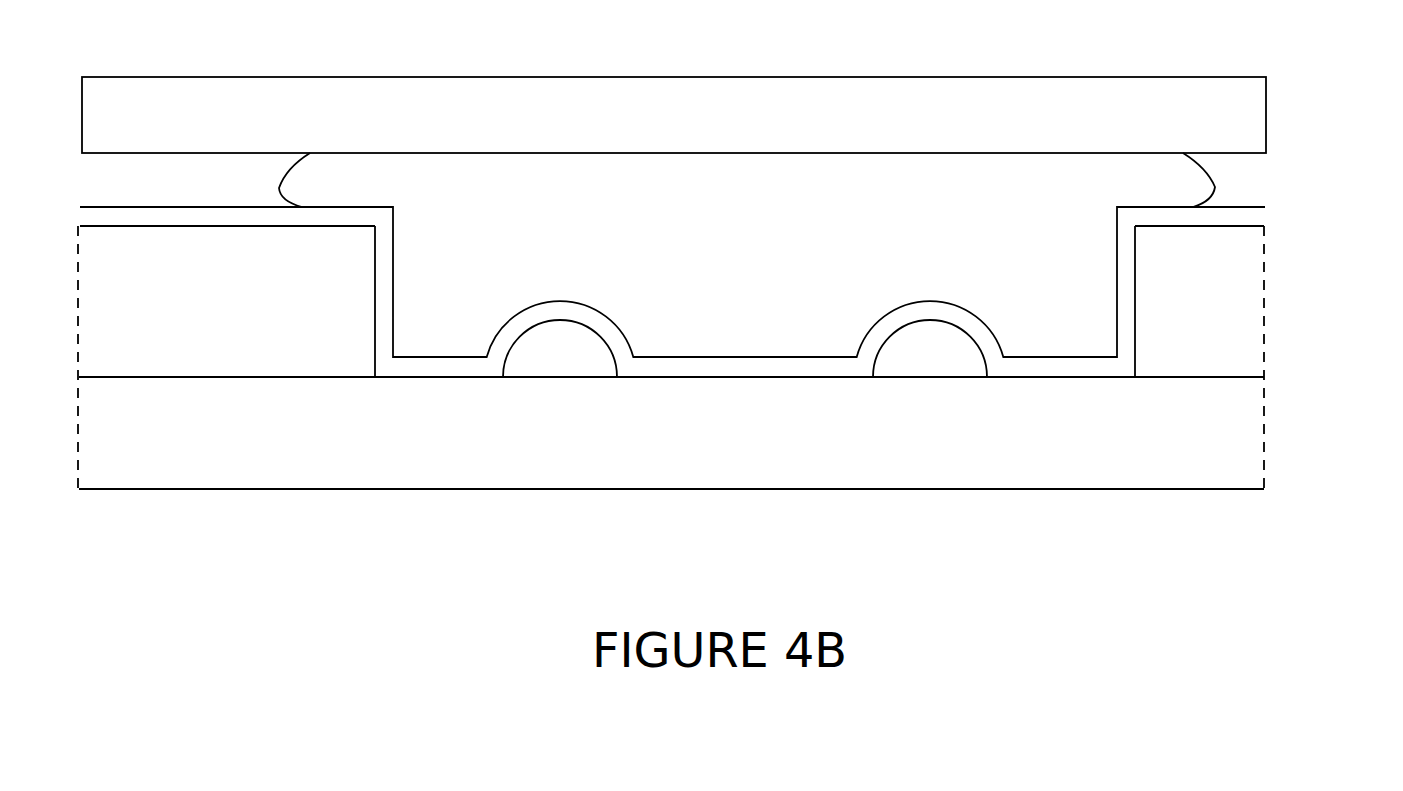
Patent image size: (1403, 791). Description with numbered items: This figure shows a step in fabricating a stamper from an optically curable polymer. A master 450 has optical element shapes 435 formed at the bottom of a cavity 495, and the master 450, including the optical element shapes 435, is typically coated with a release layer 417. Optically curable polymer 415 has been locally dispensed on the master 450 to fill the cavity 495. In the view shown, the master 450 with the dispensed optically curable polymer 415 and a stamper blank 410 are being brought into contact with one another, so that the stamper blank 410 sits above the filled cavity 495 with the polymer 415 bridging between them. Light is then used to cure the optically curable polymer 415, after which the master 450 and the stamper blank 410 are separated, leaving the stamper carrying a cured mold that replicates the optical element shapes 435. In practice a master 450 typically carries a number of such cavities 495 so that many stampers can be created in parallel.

The stamper blank 410 is at (852, 100).
The optically curable polymer 415 is at (1167, 184).
The release layer 417 is at (1250, 217).
The cavity 495 is at (1115, 282).
The optical element shapes 435 is at (557, 360).
The master 450 is at (1155, 470).